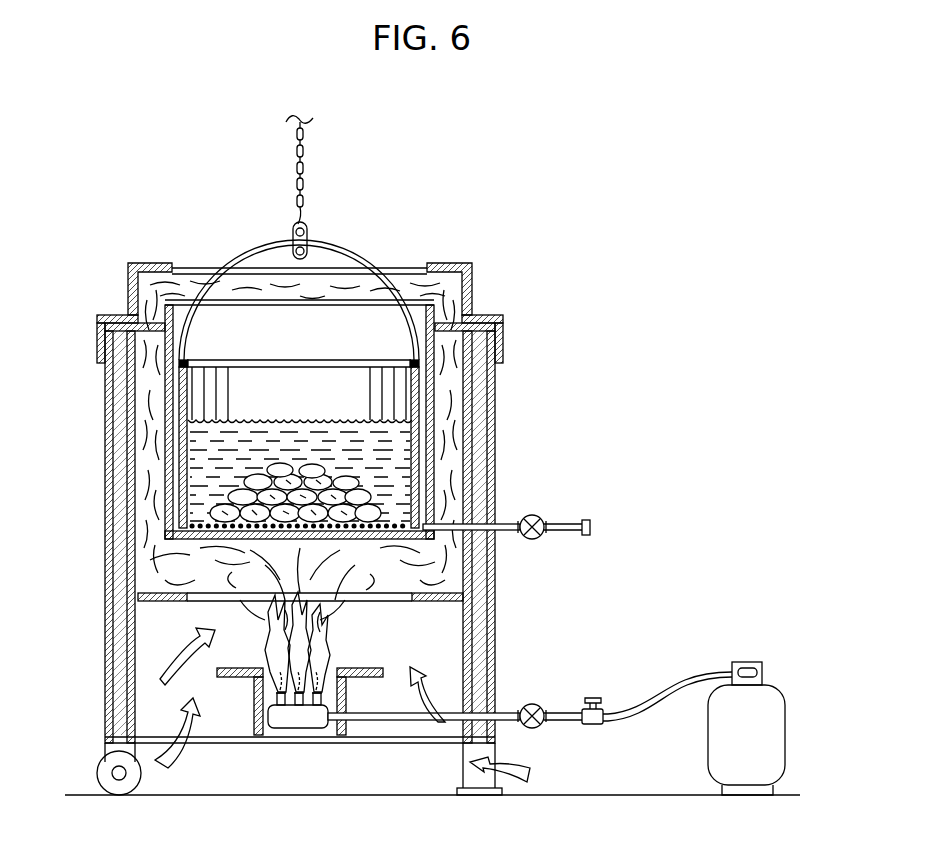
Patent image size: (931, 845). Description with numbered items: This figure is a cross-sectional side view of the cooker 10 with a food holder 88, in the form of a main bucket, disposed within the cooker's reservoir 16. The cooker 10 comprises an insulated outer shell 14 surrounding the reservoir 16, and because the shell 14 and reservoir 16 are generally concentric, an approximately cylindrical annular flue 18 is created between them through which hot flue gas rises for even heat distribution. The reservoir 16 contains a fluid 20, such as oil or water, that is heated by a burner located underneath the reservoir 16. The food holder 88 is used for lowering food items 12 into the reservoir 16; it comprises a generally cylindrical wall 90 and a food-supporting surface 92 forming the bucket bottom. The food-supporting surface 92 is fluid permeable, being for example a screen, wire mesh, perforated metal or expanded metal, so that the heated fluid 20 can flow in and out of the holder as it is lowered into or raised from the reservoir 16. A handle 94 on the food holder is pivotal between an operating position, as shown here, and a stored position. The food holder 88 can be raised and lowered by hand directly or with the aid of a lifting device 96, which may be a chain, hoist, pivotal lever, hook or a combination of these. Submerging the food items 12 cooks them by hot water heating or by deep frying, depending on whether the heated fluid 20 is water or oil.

The cooker 10 is at (584, 275).
The food items 12 is at (321, 467).
The insulated outer shell 14 is at (105, 426).
The reservoir 16 is at (436, 399).
The annular flue 18 is at (140, 501).
The fluid 20 is at (297, 419).
The food holder 88 is at (267, 362).
The generally cylindrical wall 90 is at (178, 465).
The food-supporting surface 92 is at (382, 541).
The handle 94 is at (352, 250).
The lifting device 96 is at (297, 168).